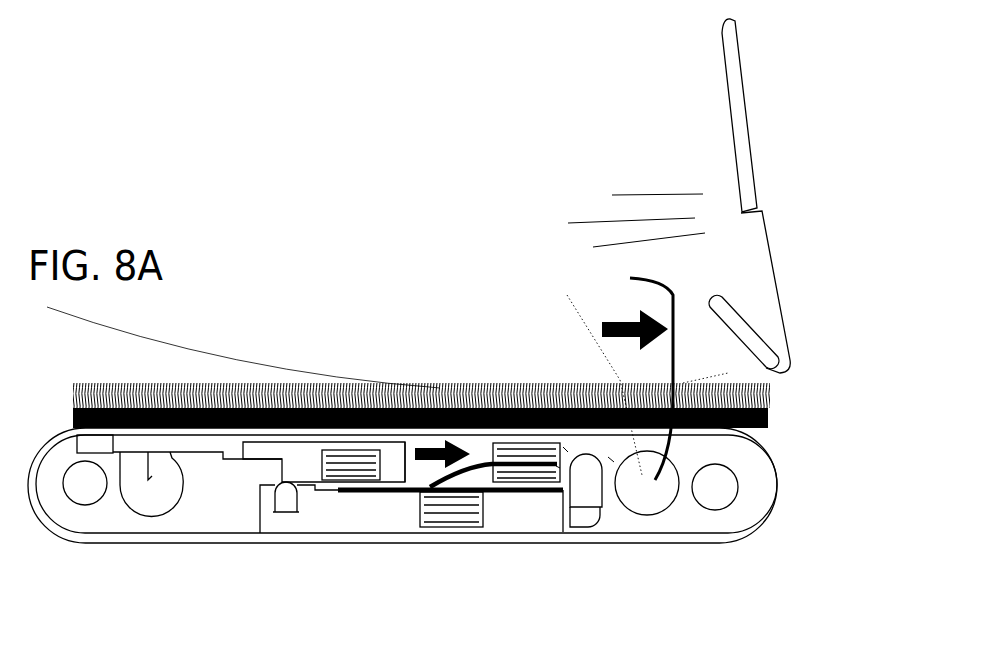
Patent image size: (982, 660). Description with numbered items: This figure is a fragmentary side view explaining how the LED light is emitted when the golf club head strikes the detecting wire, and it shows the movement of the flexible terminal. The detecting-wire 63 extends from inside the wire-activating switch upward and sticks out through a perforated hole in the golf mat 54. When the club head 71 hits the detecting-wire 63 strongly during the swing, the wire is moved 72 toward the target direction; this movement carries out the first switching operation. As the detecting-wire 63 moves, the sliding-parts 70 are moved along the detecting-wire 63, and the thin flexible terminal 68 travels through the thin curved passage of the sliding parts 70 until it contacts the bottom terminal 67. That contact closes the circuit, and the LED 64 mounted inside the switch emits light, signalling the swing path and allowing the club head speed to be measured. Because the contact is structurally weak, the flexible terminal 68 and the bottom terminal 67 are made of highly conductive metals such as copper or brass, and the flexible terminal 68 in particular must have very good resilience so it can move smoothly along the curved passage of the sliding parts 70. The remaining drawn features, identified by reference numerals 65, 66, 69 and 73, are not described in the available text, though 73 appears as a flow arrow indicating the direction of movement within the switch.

The golf mat 54 is at (177, 383).
The detecting-wire 63 is at (637, 373).
The LED 64 is at (597, 483).
The sensor 65 is at (283, 500).
The sensor housing 66 is at (273, 485).
The bottom terminal 67 is at (405, 480).
The flexible terminal 68 is at (481, 467).
The control housing 69 is at (283, 470).
The sliding parts 70 is at (405, 470).
The club head 71 is at (760, 196).
The movement to the target direction 72 is at (635, 340).
The flow arrow 73 is at (432, 445).